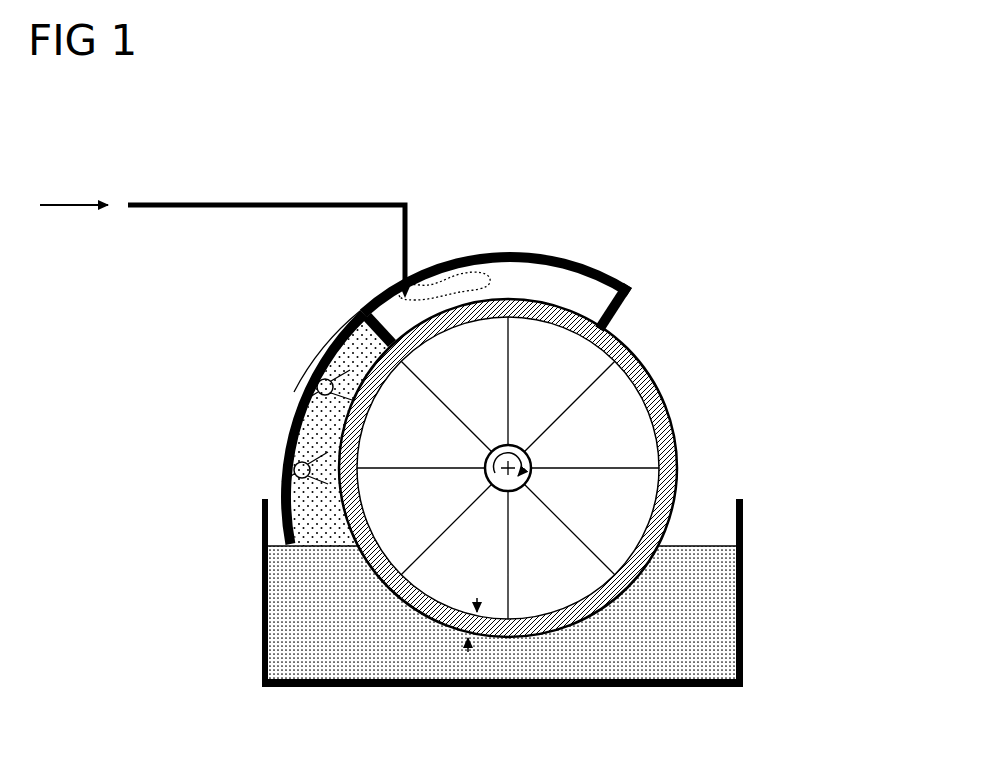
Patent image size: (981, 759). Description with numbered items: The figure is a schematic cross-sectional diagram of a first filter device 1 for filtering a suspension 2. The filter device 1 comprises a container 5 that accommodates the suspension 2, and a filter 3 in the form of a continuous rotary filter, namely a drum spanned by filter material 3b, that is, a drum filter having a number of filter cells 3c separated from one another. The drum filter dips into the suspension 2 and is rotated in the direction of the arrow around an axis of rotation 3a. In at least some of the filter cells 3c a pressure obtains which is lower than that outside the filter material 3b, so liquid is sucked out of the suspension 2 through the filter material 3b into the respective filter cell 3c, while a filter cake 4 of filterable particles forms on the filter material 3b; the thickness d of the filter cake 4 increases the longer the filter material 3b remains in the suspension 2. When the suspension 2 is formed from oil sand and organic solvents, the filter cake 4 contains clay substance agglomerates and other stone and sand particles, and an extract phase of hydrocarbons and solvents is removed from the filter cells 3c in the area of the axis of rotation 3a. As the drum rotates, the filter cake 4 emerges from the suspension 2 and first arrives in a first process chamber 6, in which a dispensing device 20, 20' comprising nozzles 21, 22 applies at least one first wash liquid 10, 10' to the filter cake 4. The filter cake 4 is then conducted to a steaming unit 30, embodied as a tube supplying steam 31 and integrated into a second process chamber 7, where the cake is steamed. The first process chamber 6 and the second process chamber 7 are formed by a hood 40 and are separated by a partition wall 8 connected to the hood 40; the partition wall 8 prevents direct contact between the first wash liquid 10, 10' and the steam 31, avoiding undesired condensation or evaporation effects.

The filter device 1 is at (684, 266).
The suspension 2 is at (752, 546).
The filter 3 is at (549, 519).
The axis of rotation 3a is at (526, 458).
The filter material 3b is at (680, 488).
The filter cells 3c is at (442, 586).
The filter cake 4 is at (656, 378).
The container 5 is at (265, 601).
The first process chamber 6 is at (343, 322).
The second process chamber 7 is at (579, 281).
The partition wall 8 is at (381, 338).
The first wash liquid 10 is at (287, 418).
The first wash liquid 10' is at (314, 342).
The dispensing device 20 is at (257, 441).
The dispensing device 20' is at (263, 358).
The nozzle 21 is at (286, 444).
The nozzle 22 is at (321, 383).
The steaming unit 30 is at (311, 203).
The steam 31 is at (58, 202).
The hood 40 is at (496, 252).
The thickness d is at (480, 592).